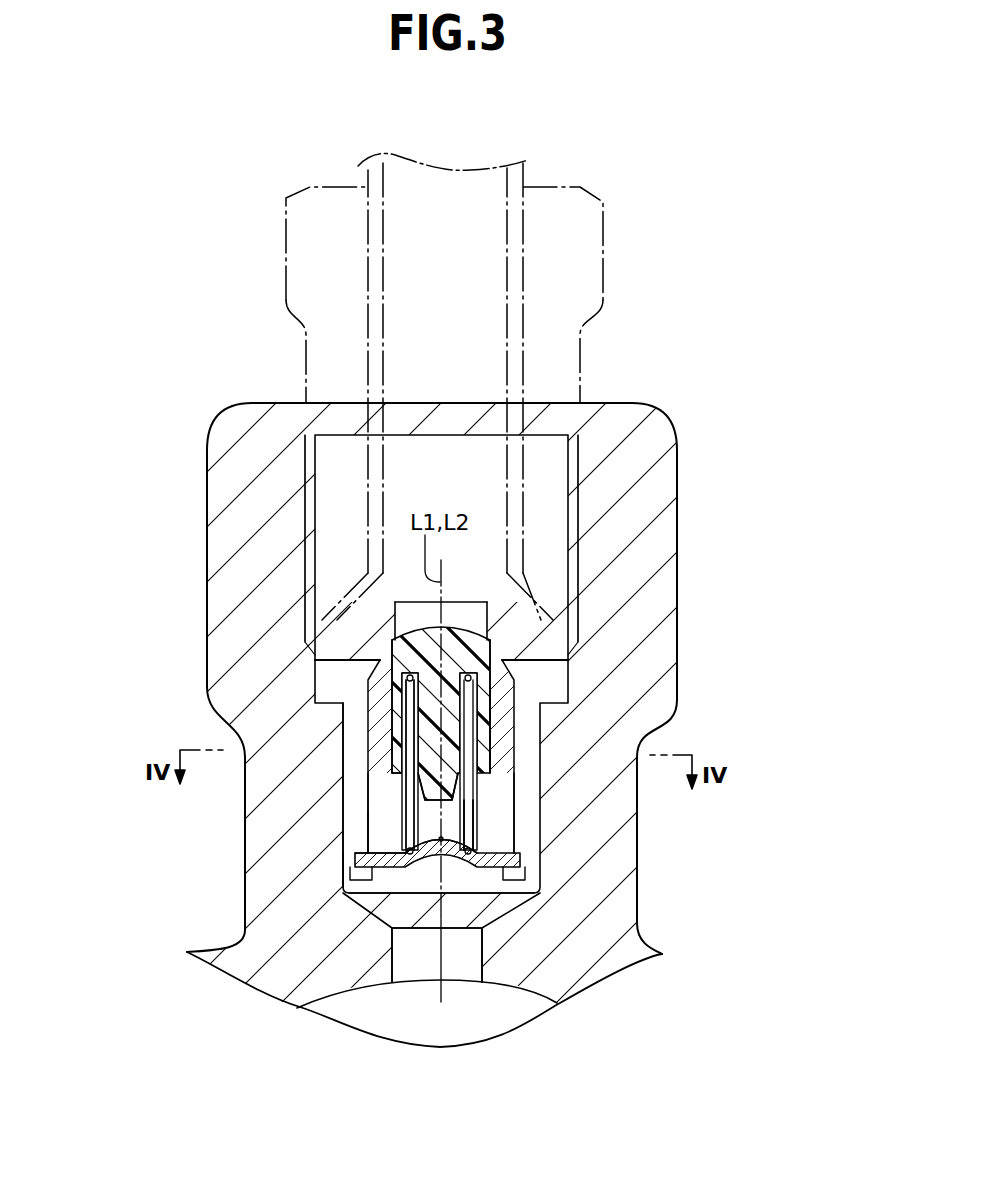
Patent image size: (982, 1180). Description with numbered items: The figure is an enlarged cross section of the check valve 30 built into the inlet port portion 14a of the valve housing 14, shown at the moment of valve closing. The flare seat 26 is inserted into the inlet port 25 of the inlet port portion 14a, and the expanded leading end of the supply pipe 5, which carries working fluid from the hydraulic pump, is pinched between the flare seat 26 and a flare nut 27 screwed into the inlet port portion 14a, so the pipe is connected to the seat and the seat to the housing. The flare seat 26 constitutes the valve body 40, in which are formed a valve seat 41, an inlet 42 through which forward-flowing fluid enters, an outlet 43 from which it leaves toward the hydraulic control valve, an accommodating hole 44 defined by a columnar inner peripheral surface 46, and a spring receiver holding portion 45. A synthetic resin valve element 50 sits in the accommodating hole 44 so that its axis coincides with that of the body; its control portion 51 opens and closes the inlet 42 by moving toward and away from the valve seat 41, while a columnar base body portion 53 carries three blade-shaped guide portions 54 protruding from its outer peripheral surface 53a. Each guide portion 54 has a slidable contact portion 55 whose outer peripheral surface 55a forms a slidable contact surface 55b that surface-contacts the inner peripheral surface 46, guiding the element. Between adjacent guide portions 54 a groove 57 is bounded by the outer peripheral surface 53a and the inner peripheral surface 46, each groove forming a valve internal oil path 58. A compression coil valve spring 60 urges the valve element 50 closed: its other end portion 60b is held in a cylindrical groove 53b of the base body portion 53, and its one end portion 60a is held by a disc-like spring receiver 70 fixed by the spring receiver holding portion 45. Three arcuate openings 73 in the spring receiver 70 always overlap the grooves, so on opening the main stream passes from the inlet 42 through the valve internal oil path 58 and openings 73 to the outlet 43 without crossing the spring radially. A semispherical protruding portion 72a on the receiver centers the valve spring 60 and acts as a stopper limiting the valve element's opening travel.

The supply pipe 5 is at (375, 272).
The flare nut 27 is at (304, 350).
The inlet port portion 14a is at (228, 485).
The valve housing 14 is at (380, 1000).
The inlet port 25 is at (395, 553).
The valve seat 41 is at (395, 620).
The inlet 42 is at (473, 620).
The valve body 40 is at (353, 657).
The flare seat 26 is at (340, 657).
The valve element 50 is at (504, 671).
The control portion 51 is at (515, 640).
The base body portion 53 is at (390, 716).
The outer peripheral surface 53a is at (396, 775).
The cylindrical groove 53b is at (504, 713).
The guide portion 54 is at (494, 716).
The slidable contact portion 55 is at (490, 735).
The outer peripheral surface 55a is at (488, 811).
The slidable contact surface 55b is at (476, 812).
The groove 57 is at (395, 735).
The valve internal oil path 58 is at (395, 735).
The valve spring 60 is at (525, 853).
The one end portion 60a is at (527, 860).
The other end portion 60b is at (366, 705).
The spring receiver 70 is at (528, 874).
The accommodating hole 44 is at (372, 830).
The inner peripheral surface 46 is at (350, 852).
The check valve 30 is at (330, 869).
The opening 73 is at (387, 860).
The protruding portion 72a is at (435, 868).
The outlet 43 is at (447, 868).
The spring receiver holding portion 45 is at (500, 893).